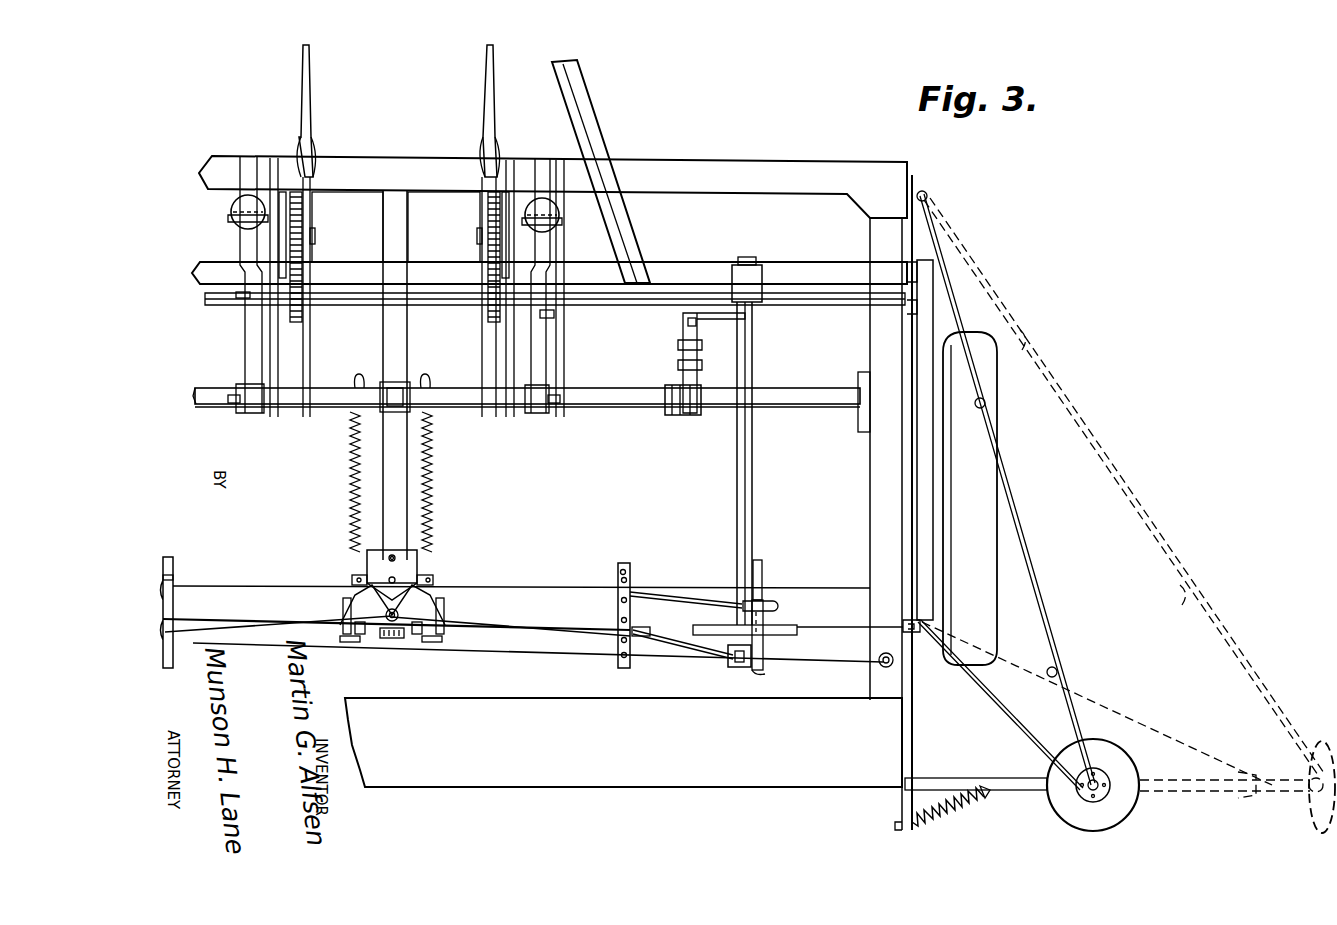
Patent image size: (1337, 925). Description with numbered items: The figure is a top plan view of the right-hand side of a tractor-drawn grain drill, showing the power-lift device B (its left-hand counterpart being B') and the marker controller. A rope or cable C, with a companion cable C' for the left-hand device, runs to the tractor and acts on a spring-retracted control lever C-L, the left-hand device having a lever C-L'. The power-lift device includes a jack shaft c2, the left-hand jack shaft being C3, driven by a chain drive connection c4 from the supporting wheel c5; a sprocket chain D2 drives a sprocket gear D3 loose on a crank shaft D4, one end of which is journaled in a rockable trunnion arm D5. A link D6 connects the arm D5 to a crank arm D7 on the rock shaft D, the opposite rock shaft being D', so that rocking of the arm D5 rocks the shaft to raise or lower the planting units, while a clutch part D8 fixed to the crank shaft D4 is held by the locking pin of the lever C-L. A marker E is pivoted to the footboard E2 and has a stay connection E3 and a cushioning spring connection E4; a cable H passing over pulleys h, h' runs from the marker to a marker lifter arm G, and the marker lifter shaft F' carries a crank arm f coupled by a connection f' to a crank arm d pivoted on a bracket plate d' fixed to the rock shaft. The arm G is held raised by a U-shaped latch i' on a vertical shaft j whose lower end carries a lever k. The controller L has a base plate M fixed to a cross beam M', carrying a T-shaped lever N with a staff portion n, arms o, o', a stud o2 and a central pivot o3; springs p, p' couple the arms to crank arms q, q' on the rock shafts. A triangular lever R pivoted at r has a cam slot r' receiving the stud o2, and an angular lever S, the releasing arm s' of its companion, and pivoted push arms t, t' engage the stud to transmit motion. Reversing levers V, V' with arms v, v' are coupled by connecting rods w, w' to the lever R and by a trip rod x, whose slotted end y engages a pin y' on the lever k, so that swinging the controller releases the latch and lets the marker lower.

The rope or cable C' is at (317, 231).
The rope or cable C is at (497, 231).
The control lever C-L' is at (325, 147).
The control lever C-L is at (464, 148).
The jack shaft c2 is at (800, 306).
The jack shaft C3 is at (232, 305).
The chain drive connection c4 is at (925, 320).
The supporting wheel c5 is at (1000, 438).
The rock shaft D is at (532, 407).
The rock shaft D' is at (206, 410).
The sprocket chain D2 is at (302, 270).
The sprocket gear D3 is at (303, 203).
The crank shaft D4 is at (316, 242).
The crank member or rockable trunnion arm D5 is at (229, 220).
The link D6 is at (244, 345).
The crank arm D7 is at (240, 390).
The clutch part D8 is at (282, 190).
The power-lift device B is at (444, 227).
The power-lift device B' is at (347, 227).
The crank arm d is at (690, 363).
The bracket plate d' is at (671, 355).
The crank arm f is at (692, 365).
The connection f' is at (693, 280).
The marker lifter shaft F' is at (763, 441).
The marker E is at (1032, 800).
The footboard E2 is at (556, 787).
The stay connection E3 is at (1028, 530).
The cushioning spring connection E4 is at (942, 812).
The marker lifter arm G is at (742, 668).
The cable H is at (531, 660).
The guide sheave or pulley h is at (864, 675).
The guide sheave or pulley h' is at (887, 635).
The hook i' is at (775, 680).
The vertical shaft j is at (775, 648).
The crank arm or latch actuating and controlling lever k is at (766, 630).
The controller L is at (417, 538).
The base plate M is at (365, 565).
The cross beam M' is at (521, 577).
The T-shaped actuating lever or plate N is at (443, 580).
The main arm or staff portion n is at (373, 636).
The actuating arm o is at (452, 578).
The actuating arm o' is at (338, 574).
The headed pin or stud o2 is at (392, 640).
The pivot o3 is at (430, 556).
The motion transmitting and retracting spring p is at (440, 482).
The motion transmitting and retracting spring p' is at (340, 482).
The crank arm q is at (436, 369).
The crank arm q' is at (348, 367).
The motion transmitting lever R is at (400, 606).
The pivot r is at (389, 544).
The arcuate or cam slot r' is at (422, 646).
The angular lever S is at (455, 632).
The releasing arm s' is at (330, 634).
The push arm t is at (440, 654).
The push arm t' is at (343, 666).
The motion transmitting and reversing lever V is at (637, 612).
The motion transmitting and reversing lever V' is at (177, 606).
The arm v is at (526, 663).
The arm v' is at (413, 577).
The connecting rod w is at (511, 613).
The connecting rod w' is at (278, 612).
The trip rod x is at (703, 597).
The slotted end portion y is at (768, 583).
The pin y' is at (766, 568).